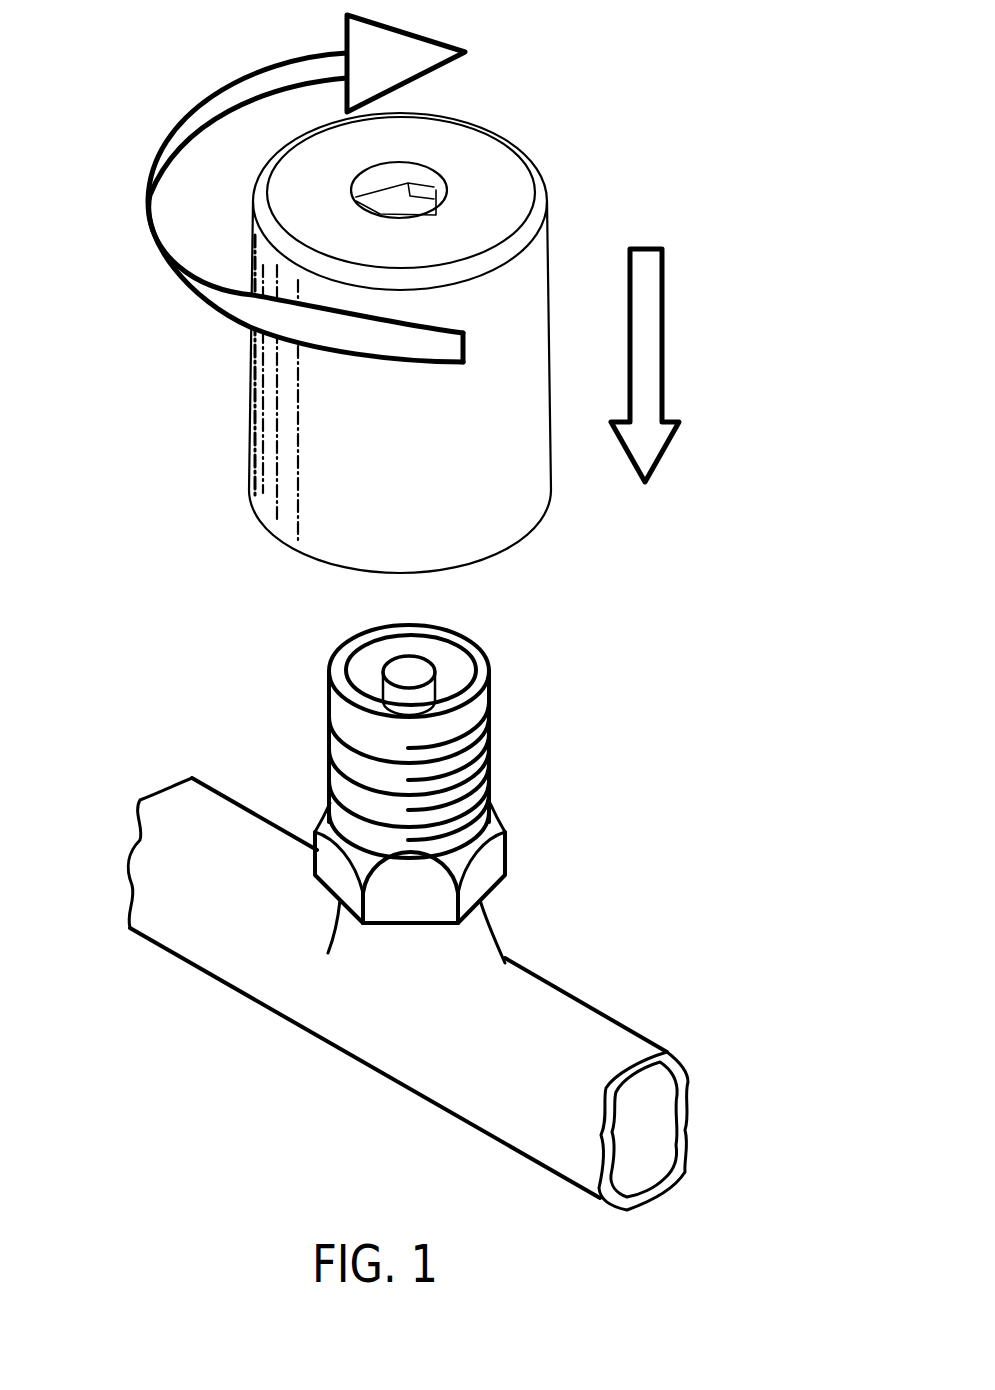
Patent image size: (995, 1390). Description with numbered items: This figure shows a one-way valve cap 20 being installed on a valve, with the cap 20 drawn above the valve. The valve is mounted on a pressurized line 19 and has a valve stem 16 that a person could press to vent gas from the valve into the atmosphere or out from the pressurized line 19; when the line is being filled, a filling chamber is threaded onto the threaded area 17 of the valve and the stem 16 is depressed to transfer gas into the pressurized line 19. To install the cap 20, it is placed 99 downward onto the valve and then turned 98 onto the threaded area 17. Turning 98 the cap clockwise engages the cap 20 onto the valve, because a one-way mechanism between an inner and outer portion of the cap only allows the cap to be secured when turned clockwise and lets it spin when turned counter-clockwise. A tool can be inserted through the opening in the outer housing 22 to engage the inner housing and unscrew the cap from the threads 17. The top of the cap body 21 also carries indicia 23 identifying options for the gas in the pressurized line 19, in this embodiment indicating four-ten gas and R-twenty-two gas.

The valve stem 16 is at (383, 672).
The threaded area 17 is at (492, 725).
The pressurized line 19 is at (595, 1010).
The one-way valve cap 20 is at (470, 327).
The cylindrical cap body 21 is at (545, 510).
The opening in the outer housing 22 is at (442, 172).
The indicia 23 is at (512, 213).
The turning 98 is at (160, 258).
The placing 99 is at (662, 319).